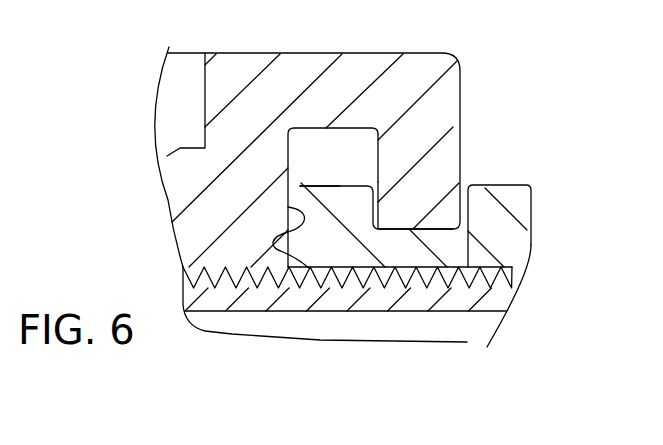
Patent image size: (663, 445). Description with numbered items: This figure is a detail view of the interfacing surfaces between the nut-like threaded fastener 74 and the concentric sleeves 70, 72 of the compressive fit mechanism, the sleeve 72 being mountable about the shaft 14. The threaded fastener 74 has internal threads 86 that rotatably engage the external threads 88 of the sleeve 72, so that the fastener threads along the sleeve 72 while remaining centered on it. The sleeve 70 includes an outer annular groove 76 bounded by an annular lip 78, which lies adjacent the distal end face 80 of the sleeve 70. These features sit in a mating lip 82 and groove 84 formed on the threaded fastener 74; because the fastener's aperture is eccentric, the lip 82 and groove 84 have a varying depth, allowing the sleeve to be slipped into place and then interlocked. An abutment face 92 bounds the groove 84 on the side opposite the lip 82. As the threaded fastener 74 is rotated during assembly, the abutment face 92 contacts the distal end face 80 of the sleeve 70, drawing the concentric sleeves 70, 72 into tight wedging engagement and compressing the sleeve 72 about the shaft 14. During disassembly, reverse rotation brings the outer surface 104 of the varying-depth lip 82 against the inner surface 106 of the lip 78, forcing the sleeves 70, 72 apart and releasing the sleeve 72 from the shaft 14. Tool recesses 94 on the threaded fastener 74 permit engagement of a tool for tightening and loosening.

The shaft 14 is at (497, 346).
The sleeve 70 is at (492, 203).
The sleeve 72 is at (508, 306).
The threaded fastener 74 is at (226, 66).
The outer annular groove 76 is at (417, 230).
The annular lip 78 is at (333, 200).
The end face 80 is at (291, 247).
The lip 82 is at (447, 170).
The groove 84 is at (337, 153).
The internal threads 86 is at (195, 285).
The external threads 88 is at (311, 270).
The abutment face 92 is at (288, 207).
The tool recesses 94 is at (173, 92).
The outer surface 104 is at (373, 167).
The inner surface 106 is at (375, 214).